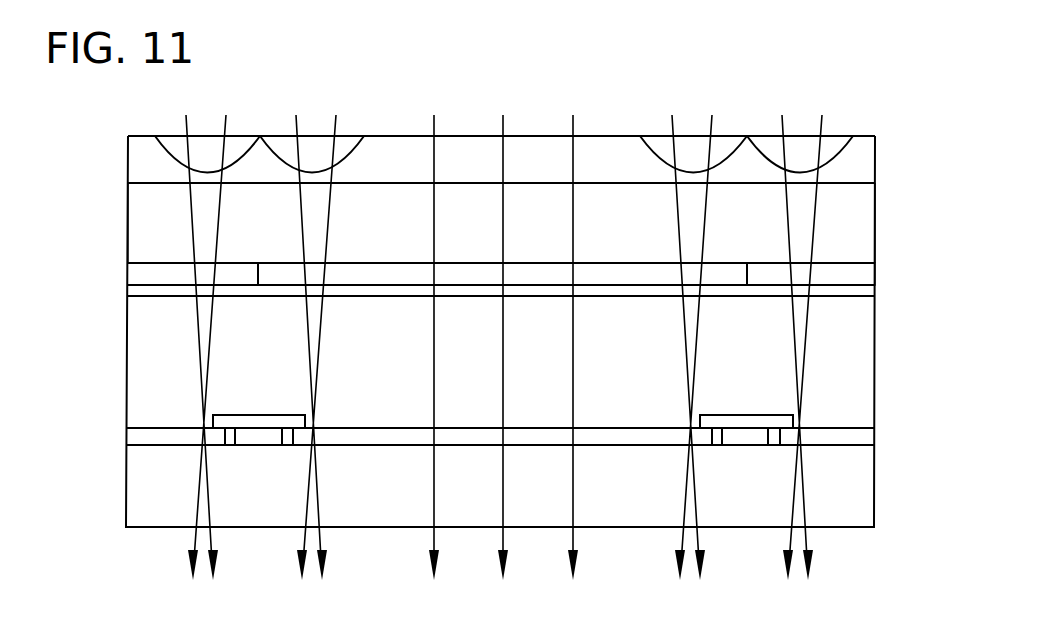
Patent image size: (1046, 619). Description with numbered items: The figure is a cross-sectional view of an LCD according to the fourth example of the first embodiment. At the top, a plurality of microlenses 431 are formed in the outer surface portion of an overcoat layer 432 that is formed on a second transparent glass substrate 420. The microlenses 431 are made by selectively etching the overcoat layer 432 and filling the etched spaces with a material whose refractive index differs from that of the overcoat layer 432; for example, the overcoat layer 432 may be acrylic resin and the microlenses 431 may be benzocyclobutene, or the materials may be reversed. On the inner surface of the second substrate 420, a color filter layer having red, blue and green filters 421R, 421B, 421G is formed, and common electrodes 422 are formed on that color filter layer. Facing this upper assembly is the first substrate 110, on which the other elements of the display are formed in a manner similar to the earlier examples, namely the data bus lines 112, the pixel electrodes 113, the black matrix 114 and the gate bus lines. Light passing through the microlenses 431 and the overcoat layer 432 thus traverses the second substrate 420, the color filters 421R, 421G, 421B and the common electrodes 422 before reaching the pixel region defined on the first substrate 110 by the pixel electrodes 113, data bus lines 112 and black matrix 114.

The first substrate 110 is at (153, 507).
The data bus lines 112 is at (745, 440).
The pixel electrodes 113 is at (150, 438).
The black matrix 114 is at (247, 425).
The second transparent glass substrate 420 is at (155, 237).
The red filter 421R is at (152, 275).
The green filter 421G is at (400, 278).
The blue filter 421B is at (833, 275).
The common electrodes 422 is at (835, 295).
The microlenses 431 is at (663, 150).
The overcoat layer 432 is at (137, 147).